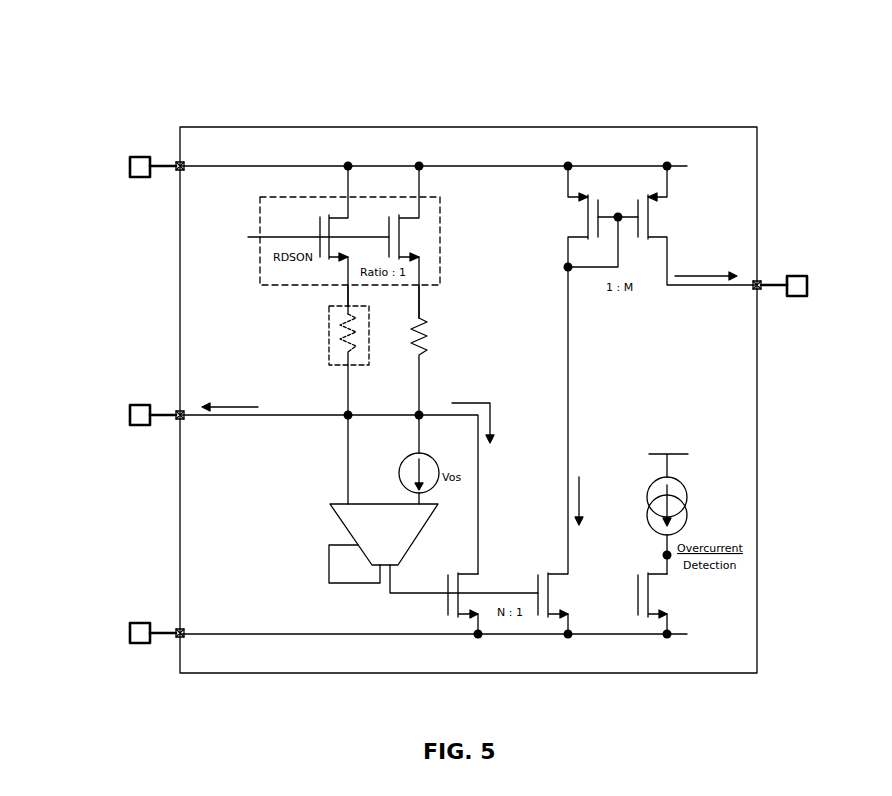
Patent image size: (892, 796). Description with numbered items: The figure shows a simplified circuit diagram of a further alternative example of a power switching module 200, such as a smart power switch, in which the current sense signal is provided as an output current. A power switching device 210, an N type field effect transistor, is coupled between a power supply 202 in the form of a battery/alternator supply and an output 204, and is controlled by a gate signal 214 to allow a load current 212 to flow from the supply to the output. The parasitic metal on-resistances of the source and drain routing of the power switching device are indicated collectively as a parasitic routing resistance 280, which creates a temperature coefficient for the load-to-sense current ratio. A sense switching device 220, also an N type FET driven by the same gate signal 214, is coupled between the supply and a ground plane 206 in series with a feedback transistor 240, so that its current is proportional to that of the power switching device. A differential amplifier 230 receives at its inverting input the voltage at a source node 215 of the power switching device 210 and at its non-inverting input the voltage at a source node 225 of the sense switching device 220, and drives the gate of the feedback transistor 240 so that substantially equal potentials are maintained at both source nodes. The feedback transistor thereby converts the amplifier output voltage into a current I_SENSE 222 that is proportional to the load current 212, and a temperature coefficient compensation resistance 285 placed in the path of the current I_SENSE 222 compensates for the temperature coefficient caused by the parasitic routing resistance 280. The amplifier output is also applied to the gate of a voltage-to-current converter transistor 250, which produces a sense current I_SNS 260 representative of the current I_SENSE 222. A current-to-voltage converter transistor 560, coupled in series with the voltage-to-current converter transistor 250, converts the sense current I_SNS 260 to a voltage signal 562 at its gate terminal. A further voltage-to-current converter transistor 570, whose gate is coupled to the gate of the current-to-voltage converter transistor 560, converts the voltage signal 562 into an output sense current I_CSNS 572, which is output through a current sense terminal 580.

The power switching module 200 is at (516, 58).
The power supply 202 is at (100, 160).
The output 204 is at (110, 410).
The ground plane 206 is at (110, 629).
The power switching device 210 is at (318, 230).
The load current 212 is at (240, 392).
The gate signal 214 is at (243, 230).
The source node 215 is at (348, 291).
The sense switching device 220 is at (388, 230).
The current I_SENSE 222 is at (490, 393).
The source node 225 is at (419, 291).
The differential amplifier 230 is at (342, 525).
The feedback transistor 240 is at (446, 587).
The voltage-to-current converter transistor 250 is at (535, 587).
The sense current I_SNS 260 is at (586, 483).
The parasitic routing resistance 280 is at (328, 356).
The temperature coefficient compensation resistance 285 is at (432, 339).
The current-to-voltage converter transistor 560 is at (580, 216).
The voltage signal 562 is at (618, 207).
The further voltage-to-current converter transistor 570 is at (660, 220).
The output sense current I_CSNS 572 is at (710, 260).
The current sense terminal 580 is at (800, 277).